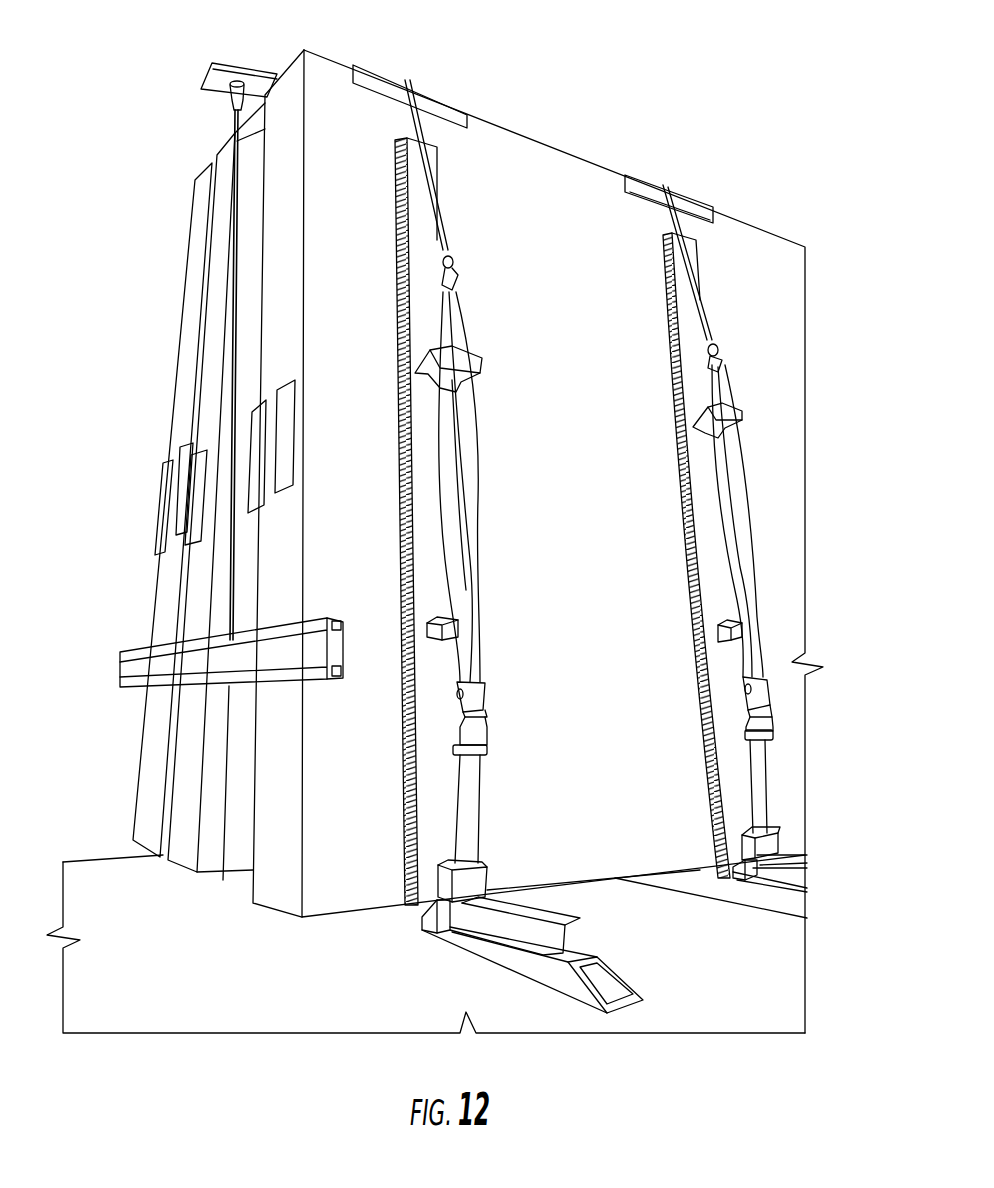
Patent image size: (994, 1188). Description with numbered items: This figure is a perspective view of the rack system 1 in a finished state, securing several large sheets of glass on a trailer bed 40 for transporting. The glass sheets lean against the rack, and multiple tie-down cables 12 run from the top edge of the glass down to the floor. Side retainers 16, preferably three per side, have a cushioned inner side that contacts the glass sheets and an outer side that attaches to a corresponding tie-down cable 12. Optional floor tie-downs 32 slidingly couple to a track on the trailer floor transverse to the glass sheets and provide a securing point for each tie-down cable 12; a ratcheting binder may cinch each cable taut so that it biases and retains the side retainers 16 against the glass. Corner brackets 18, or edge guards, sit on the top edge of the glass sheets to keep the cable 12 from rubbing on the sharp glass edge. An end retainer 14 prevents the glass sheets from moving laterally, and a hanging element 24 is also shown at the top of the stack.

The rack system 1 is at (115, 263).
The tie-down cable 12 is at (462, 488).
The end retainer 14 is at (133, 682).
The side retainer 16 is at (424, 263).
The corner bracket 18 is at (643, 183).
The cable anchor bolt 24 is at (258, 72).
The floor tie-down 32 is at (443, 920).
The trailer bed 40 is at (148, 1003).